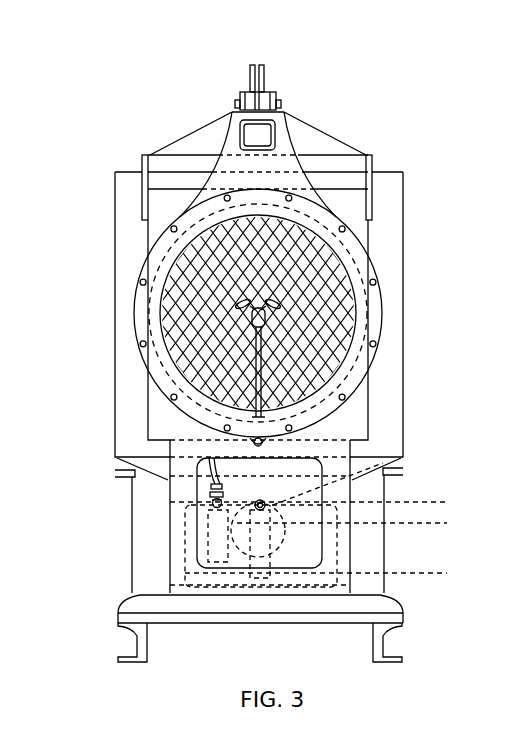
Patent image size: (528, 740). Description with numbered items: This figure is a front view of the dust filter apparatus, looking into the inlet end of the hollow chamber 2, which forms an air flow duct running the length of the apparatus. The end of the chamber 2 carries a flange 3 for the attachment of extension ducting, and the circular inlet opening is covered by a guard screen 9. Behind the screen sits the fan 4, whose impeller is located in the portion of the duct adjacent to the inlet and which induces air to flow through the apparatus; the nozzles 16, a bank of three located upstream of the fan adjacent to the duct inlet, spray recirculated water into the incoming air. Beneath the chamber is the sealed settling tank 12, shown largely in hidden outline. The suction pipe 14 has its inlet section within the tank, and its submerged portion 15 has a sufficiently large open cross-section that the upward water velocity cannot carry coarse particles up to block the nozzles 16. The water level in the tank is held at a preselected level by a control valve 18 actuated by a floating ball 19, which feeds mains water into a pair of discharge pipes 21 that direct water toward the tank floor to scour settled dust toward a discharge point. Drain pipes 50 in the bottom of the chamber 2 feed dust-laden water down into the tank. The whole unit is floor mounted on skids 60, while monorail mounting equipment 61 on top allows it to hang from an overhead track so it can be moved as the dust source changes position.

The hollow chamber 2 is at (377, 228).
The flanges 3 is at (374, 333).
The fan 4 is at (377, 265).
The guard screen 9 is at (326, 362).
The settling tank 12 is at (178, 536).
The suction pipe 14 is at (213, 480).
The submerged portion of suction pipe 15 is at (192, 548).
The nozzles 16 is at (283, 312).
The control valve 18 is at (324, 499).
The floating ball 19 is at (357, 526).
The discharge pipes 21 is at (190, 584).
The drain pipes 50 is at (331, 577).
The skids 60 is at (132, 640).
The monorail mounting equipment 61 is at (240, 90).